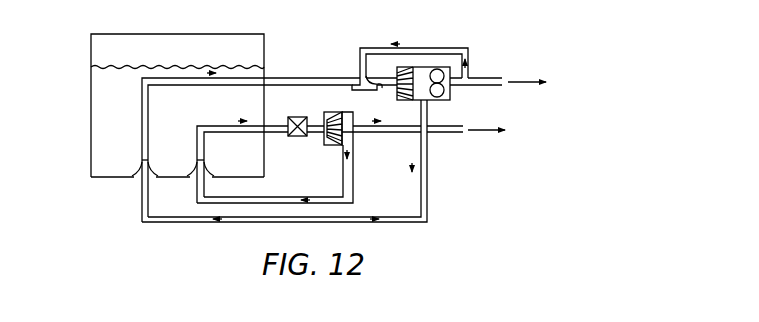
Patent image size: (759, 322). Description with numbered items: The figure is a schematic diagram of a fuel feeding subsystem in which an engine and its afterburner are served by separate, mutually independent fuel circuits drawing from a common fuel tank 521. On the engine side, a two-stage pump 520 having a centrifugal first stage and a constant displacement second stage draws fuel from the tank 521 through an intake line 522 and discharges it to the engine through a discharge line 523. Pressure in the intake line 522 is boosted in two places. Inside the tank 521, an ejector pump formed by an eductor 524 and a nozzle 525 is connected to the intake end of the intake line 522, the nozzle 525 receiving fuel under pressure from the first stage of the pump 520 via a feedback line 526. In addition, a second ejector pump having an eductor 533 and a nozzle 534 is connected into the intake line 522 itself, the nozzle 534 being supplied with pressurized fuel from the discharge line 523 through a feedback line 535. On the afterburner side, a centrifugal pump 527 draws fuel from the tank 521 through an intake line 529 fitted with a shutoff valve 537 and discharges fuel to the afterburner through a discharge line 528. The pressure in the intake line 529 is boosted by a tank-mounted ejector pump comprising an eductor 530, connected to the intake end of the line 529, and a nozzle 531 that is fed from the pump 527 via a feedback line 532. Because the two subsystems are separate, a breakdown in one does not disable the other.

The two-stage pump 520 is at (440, 62).
The fuel tank 521 is at (100, 130).
The intake line 522 is at (292, 78).
The discharge line 523 is at (489, 78).
The eductor 524 is at (140, 168).
The nozzle 525 is at (142, 166).
The feedback line 526 is at (432, 184).
The centrifugal pump 527 is at (353, 140).
The discharge line 528 is at (456, 133).
The intake line 529 is at (223, 126).
The eductor 530 is at (208, 169).
The nozzle 531 is at (205, 174).
The feedback line 532 is at (352, 186).
The eductor 533 is at (371, 80).
The nozzle 534 is at (371, 88).
The feedback line 535 is at (404, 48).
The shutoff valve 537 is at (300, 117).